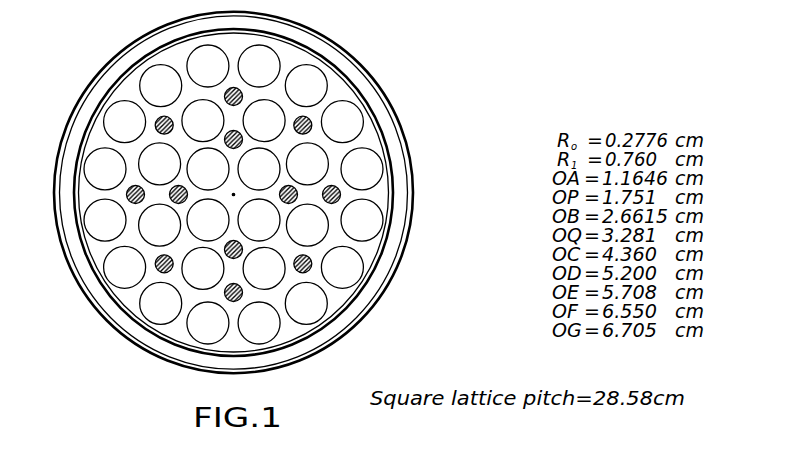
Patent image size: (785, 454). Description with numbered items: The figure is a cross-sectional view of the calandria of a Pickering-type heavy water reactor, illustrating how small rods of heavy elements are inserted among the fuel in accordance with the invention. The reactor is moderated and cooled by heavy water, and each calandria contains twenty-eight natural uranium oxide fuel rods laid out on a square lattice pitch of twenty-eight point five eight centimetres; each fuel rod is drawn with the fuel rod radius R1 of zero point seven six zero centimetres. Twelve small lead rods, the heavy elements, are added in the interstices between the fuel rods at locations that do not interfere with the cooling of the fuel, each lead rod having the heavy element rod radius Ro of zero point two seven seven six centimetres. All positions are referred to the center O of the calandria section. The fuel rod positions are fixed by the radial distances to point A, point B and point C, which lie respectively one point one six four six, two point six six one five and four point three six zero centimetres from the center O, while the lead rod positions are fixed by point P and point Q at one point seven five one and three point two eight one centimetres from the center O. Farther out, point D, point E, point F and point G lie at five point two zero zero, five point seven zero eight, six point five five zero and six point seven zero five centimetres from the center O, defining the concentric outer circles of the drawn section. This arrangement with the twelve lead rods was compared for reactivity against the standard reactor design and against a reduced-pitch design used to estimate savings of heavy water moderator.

The point A is at (234, 194).
The point B is at (160, 225).
The point C is at (234, 194).
The point D is at (234, 194).
The point E is at (234, 194).
The point F is at (234, 194).
The point G is at (233, 204).
The center O is at (240, 197).
The point P is at (234, 250).
The point Q is at (234, 293).
The heavy element rod radius Ro is at (234, 130).
The fuel rod radius R1 is at (312, 185).